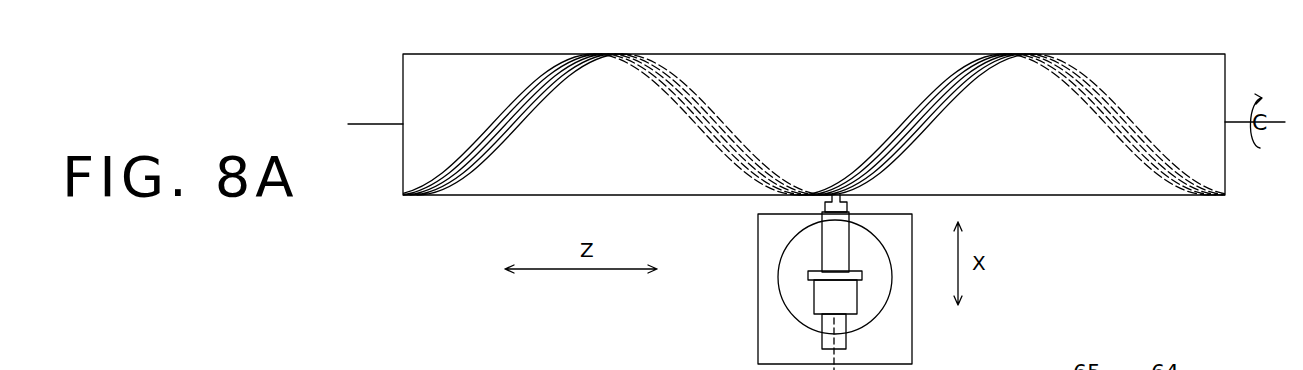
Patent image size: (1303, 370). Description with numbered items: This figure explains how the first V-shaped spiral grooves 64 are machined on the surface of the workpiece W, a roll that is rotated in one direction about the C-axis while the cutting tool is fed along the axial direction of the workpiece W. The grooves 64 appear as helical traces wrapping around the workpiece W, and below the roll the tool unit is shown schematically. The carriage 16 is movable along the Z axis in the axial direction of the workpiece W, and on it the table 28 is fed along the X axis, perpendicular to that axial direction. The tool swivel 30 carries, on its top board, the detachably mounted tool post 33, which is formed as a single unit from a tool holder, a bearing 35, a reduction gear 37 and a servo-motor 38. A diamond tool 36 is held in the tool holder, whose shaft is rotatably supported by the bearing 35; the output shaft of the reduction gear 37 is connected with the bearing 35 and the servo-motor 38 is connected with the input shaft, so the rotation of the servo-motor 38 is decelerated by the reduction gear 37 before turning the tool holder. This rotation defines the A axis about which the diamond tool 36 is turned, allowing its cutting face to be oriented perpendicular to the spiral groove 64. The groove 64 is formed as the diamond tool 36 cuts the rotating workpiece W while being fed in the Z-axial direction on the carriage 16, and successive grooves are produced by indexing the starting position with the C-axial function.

The carriage 16 is at (818, 264).
The table 28 is at (770, 240).
The tool swivel 30 is at (790, 290).
The tool post 33 is at (882, 296).
The bearing 35 is at (845, 235).
The diamond tool 36 is at (847, 207).
The reduction gear 37 is at (845, 298).
The servo-motor 38 is at (806, 342).
The first V-shaped spiral grooves 64 is at (913, 110).
The workpiece W is at (1080, 178).